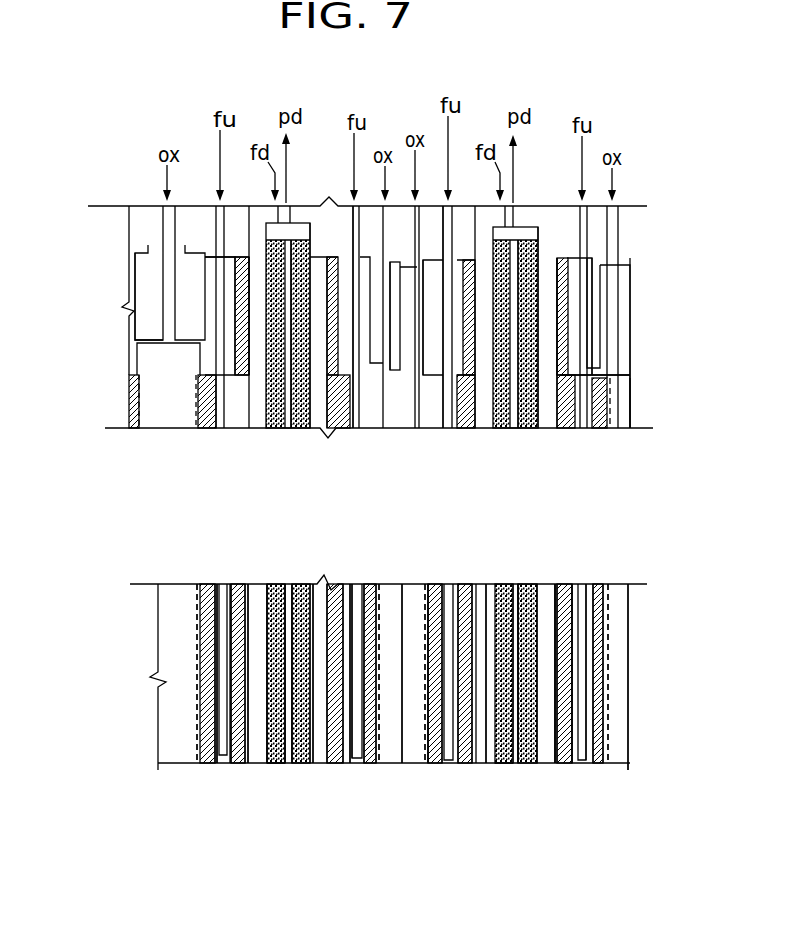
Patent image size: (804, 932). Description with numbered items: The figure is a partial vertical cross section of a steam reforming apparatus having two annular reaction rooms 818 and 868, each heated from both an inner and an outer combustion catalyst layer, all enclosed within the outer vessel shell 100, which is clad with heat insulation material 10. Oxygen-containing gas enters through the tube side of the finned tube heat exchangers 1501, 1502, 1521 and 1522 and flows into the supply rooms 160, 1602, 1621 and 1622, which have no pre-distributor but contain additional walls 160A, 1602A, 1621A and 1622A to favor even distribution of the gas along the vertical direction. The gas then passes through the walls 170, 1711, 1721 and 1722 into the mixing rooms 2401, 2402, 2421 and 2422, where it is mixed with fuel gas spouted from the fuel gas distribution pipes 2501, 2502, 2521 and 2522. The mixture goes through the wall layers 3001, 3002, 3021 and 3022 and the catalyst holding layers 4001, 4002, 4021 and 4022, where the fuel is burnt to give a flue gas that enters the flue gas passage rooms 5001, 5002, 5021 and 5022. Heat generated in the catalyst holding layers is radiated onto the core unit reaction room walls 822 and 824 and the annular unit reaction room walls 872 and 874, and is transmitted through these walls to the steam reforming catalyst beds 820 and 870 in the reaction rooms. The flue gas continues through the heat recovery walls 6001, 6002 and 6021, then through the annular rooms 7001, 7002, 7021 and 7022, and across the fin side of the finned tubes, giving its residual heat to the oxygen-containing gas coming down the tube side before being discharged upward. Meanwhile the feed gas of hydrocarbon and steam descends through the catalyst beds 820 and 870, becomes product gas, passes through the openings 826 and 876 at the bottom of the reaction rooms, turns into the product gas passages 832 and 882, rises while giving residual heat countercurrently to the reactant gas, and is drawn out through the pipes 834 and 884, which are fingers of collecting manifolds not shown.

The heat insulation material 10 is at (405, 585).
The outer vessel shell 100 is at (630, 405).
The supply room 160 is at (152, 360).
The additional wall 160A is at (194, 415).
The wall 170 is at (200, 750).
The reaction room 818 is at (310, 205).
The reaction catalyst bed 820 is at (300, 585).
The core unit reaction room wall 822 is at (268, 642).
The core unit reaction room wall 824 is at (300, 665).
The opening 826 is at (278, 767).
The product gas passage 832 is at (270, 611).
The pipe 834 is at (297, 205).
The reaction room 868 is at (532, 208).
The reaction catalyst bed 870 is at (527, 585).
The annular unit reaction room wall 872 is at (538, 608).
The annular unit reaction room wall 874 is at (538, 652).
The opening 876 is at (502, 767).
The product gas passage 882 is at (570, 585).
The pipe 884 is at (527, 208).
The finned tube heat exchanger 1501 is at (148, 323).
The finned tube heat exchanger 1502 is at (395, 353).
The finned tube heat exchanger 1521 is at (427, 332).
The finned tube heat exchanger 1522 is at (623, 313).
The supply room 1602 is at (390, 585).
The additional wall 1602A is at (385, 585).
The supply room 1621 is at (415, 585).
The additional wall 1621A is at (420, 585).
The supply room 1622 is at (630, 585).
The additional wall 1622A is at (620, 585).
The wall 1711 is at (370, 767).
The wall 1721 is at (428, 767).
The wall 1722 is at (603, 752).
The mixing room 2401 is at (217, 767).
The mixing room 2402 is at (352, 767).
The mixing room 2421 is at (442, 767).
The mixing room 2422 is at (587, 767).
The fuel gas distribution pipe 2501 is at (215, 690).
The fuel gas distribution pipe 2502 is at (350, 727).
The fuel gas distribution pipe 2521 is at (452, 667).
The fuel gas distribution pipe 2522 is at (587, 698).
The wall layer 3001 is at (237, 767).
The wall layer 3002 is at (338, 767).
The wall layer 3021 is at (460, 767).
The wall layer 3022 is at (568, 767).
The catalyst holding layer 4001 is at (245, 767).
The catalyst holding layer 4002 is at (333, 767).
The catalyst holding layer 4021 is at (472, 767).
The catalyst holding layer 4022 is at (562, 767).
The flue gas passage room 5001 is at (258, 585).
The flue gas passage room 5002 is at (313, 585).
The flue gas passage room 5021 is at (488, 585).
The flue gas passage room 5022 is at (550, 585).
The heat recovery wall 6001 is at (228, 252).
The heat recovery wall 6002 is at (368, 208).
The heat recovery wall 6021 is at (467, 208).
The annular room 7001 is at (227, 278).
The annular room 7002 is at (363, 315).
The annular room 7021 is at (440, 276).
The annular room 7022 is at (593, 303).